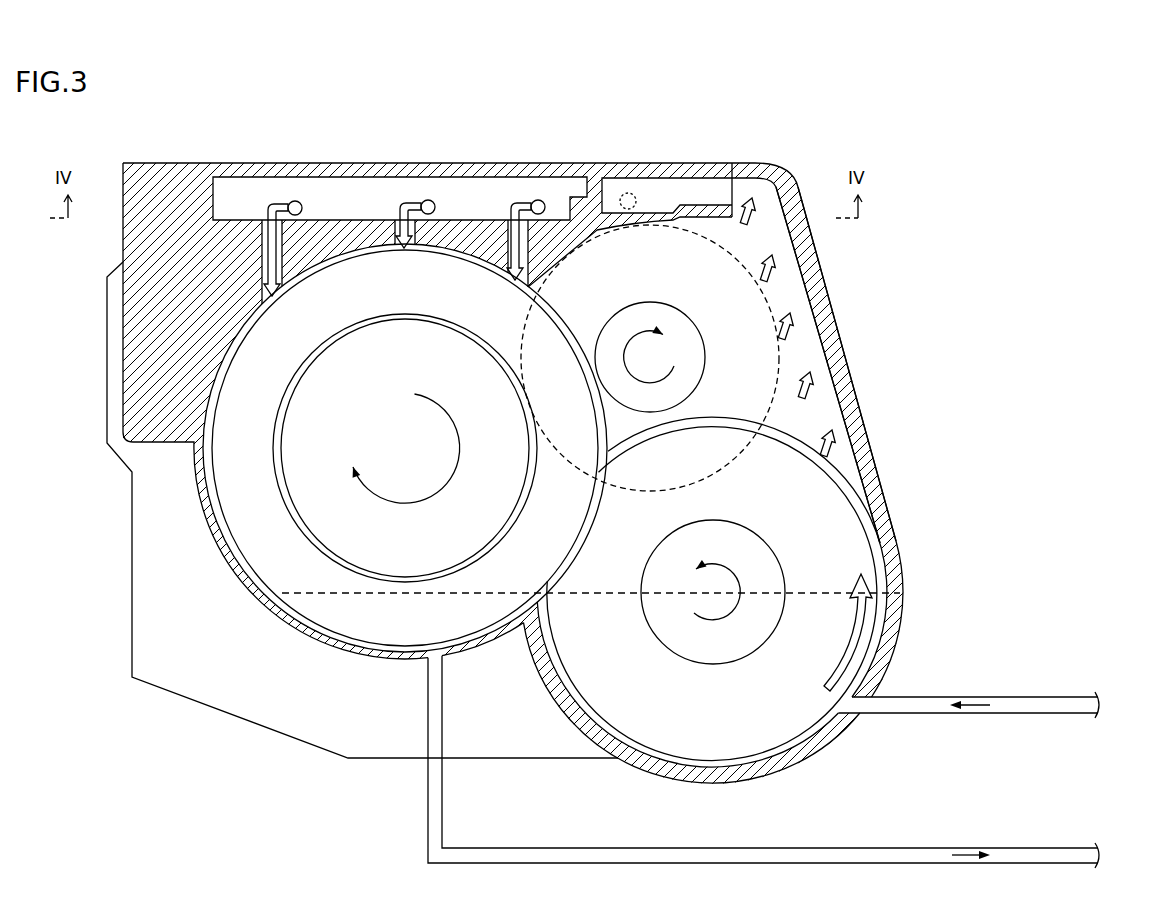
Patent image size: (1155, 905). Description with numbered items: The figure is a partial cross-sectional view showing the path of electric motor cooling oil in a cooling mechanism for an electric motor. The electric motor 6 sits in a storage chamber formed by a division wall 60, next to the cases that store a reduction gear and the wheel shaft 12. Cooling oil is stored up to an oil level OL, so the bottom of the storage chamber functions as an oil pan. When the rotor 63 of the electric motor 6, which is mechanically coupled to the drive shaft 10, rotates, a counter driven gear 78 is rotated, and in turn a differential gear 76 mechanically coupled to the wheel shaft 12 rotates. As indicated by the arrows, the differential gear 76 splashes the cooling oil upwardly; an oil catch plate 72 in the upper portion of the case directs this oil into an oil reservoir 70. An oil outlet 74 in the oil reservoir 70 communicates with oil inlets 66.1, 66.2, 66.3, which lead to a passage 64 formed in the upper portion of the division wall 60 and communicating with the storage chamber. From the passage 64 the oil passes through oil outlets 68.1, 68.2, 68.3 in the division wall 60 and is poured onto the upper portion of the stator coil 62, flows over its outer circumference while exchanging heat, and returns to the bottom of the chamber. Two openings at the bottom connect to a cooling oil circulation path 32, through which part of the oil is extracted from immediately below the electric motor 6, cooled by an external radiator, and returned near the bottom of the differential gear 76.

The electric motor 6 is at (290, 540).
The drive shaft 10 is at (405, 560).
The wheel shaft 12 is at (863, 439).
The cooling oil circulation path 32 is at (1117, 690).
The division wall 60 is at (145, 330).
The stator coil 62 is at (400, 622).
The rotor 63 is at (358, 555).
The passage 64 is at (257, 190).
The oil inlet 66.1 is at (300, 202).
The oil inlet 66.2 is at (436, 200).
The oil inlet 66.3 is at (548, 200).
The oil outlet 68.1 is at (262, 232).
The oil outlet 68.2 is at (402, 200).
The oil outlet 68.3 is at (511, 220).
The oil reservoir 70 is at (673, 187).
The oil catch plate 72 is at (732, 163).
The oil outlet 74 is at (633, 192).
The differential gear 76 is at (858, 488).
The counter driven gear 78 is at (779, 357).
The oil level OL is at (822, 590).